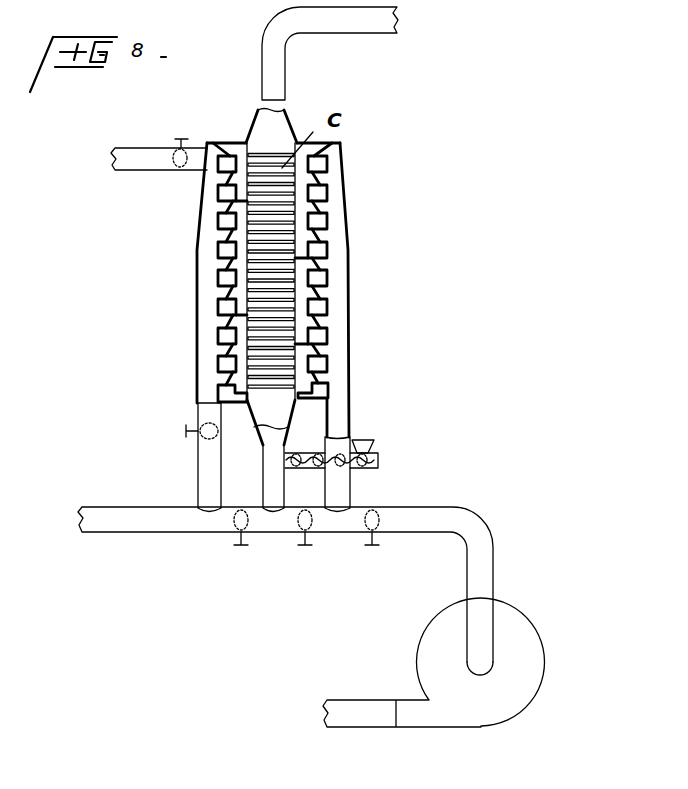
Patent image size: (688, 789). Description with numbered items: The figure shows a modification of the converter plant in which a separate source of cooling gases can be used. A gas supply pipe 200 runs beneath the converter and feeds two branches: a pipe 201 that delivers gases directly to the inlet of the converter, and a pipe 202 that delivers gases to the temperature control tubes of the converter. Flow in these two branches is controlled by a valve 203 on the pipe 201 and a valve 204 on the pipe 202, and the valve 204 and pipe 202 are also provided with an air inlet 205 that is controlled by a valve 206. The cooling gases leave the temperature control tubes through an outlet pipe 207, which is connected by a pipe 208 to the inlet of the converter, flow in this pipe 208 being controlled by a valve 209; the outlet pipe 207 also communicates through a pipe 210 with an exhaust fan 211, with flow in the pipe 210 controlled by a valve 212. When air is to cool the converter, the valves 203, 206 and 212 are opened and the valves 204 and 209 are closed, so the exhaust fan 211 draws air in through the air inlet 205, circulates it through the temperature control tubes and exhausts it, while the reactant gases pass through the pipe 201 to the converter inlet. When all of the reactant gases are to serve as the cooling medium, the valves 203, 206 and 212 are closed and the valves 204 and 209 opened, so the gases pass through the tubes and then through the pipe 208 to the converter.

The gas supply pipe 200 is at (97, 517).
The pipe 201 is at (279, 528).
The pipe 202 is at (205, 466).
The valve 203 is at (242, 555).
The valve 204 is at (185, 430).
The air inlet 205 is at (145, 160).
The valve 206 is at (172, 138).
The outlet pipe 207 is at (348, 266).
The pipe 208 is at (345, 527).
The valve 209 is at (311, 547).
The pipe 210 is at (473, 543).
The exhaust fan 211 is at (537, 627).
The valve 212 is at (378, 537).